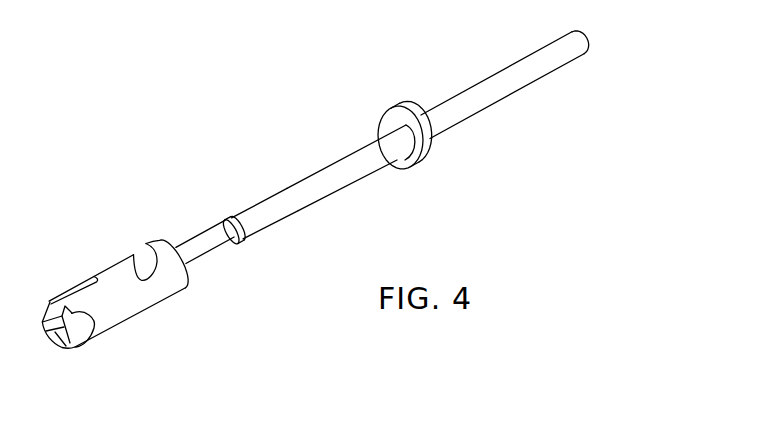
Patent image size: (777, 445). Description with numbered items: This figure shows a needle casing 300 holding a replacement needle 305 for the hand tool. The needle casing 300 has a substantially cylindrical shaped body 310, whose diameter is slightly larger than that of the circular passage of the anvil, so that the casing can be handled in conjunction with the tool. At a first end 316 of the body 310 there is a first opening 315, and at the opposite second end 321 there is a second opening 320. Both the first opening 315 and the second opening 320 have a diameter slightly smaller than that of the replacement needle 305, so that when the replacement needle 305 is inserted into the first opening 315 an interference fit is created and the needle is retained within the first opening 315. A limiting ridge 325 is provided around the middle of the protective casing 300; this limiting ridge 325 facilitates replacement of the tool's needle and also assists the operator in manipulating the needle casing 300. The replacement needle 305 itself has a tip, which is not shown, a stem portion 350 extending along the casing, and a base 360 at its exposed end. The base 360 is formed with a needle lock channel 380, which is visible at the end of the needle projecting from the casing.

The needle casing 300 is at (326, 97).
The replacement needle 305 is at (88, 255).
The cylindrical shaped body 310 is at (340, 190).
The first opening 315 is at (237, 216).
The first end 316 is at (257, 226).
The second opening 320 is at (589, 38).
The second end 321 is at (567, 60).
The limiting ridge 325 is at (427, 160).
The stem portion 350 is at (215, 256).
The base 360 is at (85, 343).
The needle lock channel 380 is at (137, 258).